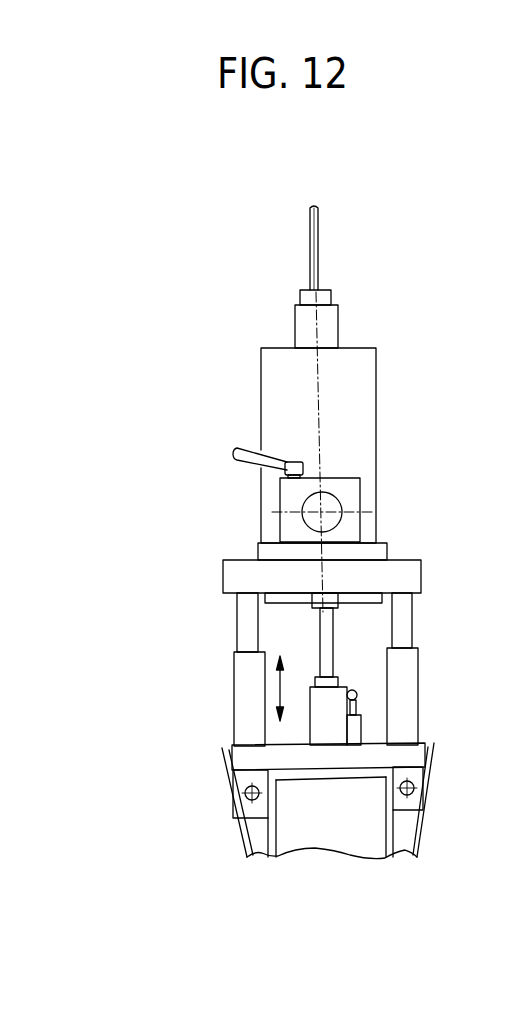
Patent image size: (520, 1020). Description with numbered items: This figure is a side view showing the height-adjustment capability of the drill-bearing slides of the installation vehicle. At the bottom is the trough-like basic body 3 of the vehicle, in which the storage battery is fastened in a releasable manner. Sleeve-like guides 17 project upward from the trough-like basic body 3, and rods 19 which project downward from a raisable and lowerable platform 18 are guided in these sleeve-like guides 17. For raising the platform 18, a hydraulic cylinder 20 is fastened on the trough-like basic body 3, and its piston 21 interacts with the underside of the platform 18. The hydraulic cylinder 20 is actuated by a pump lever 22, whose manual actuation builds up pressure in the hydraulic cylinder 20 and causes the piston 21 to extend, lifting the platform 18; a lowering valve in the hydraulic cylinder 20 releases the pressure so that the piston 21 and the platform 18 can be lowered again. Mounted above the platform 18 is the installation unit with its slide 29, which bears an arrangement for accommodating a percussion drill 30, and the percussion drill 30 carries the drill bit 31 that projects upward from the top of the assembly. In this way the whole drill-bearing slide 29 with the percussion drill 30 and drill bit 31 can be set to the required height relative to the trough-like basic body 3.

The drill bit 31 is at (317, 262).
The percussion drill 30 is at (328, 323).
The slide 29 is at (360, 410).
The raisable and lowerable platform 18 is at (387, 580).
The rods 19 is at (403, 627).
The sleeve-like guides 17 is at (402, 673).
The piston 21 is at (325, 635).
The hydraulic cylinder 20 is at (328, 723).
The pump lever 22 is at (355, 720).
The trough-like basic body 3 is at (425, 793).